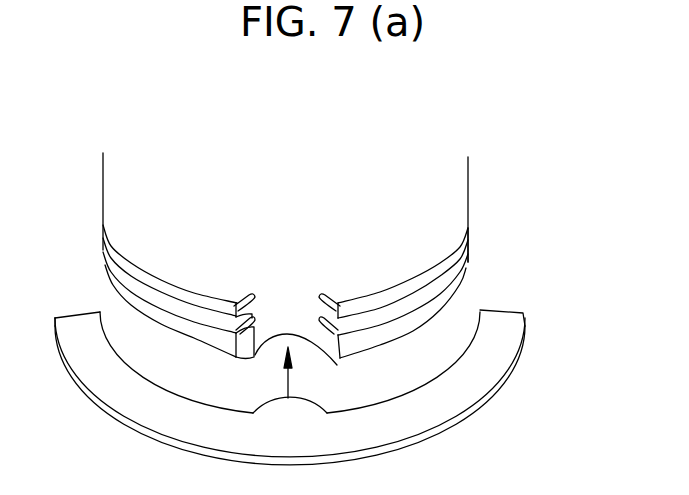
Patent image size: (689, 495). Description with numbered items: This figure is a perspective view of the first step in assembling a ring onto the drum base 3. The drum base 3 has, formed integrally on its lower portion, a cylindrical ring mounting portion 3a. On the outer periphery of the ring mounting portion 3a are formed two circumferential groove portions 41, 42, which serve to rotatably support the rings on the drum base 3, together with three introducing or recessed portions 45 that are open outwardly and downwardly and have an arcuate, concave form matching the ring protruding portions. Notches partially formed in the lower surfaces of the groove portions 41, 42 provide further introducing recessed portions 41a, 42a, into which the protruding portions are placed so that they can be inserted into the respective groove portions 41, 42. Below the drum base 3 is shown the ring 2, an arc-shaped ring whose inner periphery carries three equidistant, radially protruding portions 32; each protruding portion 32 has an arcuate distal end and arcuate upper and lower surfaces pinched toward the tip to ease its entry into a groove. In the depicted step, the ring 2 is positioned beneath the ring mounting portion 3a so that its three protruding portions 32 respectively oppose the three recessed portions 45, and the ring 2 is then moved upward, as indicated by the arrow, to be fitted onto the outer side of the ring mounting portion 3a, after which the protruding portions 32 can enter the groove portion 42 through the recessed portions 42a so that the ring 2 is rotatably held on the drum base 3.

The second ring 2 is at (118, 397).
The drum base 3 is at (438, 172).
The ring mounting portion 3a is at (471, 262).
The protruding portion 32 is at (316, 420).
The groove portion 41 is at (192, 330).
The recessed portion 41a is at (254, 357).
The groove portion 42 is at (187, 297).
The recessed portion 42a is at (253, 296).
The recessed portion 45 is at (290, 306).